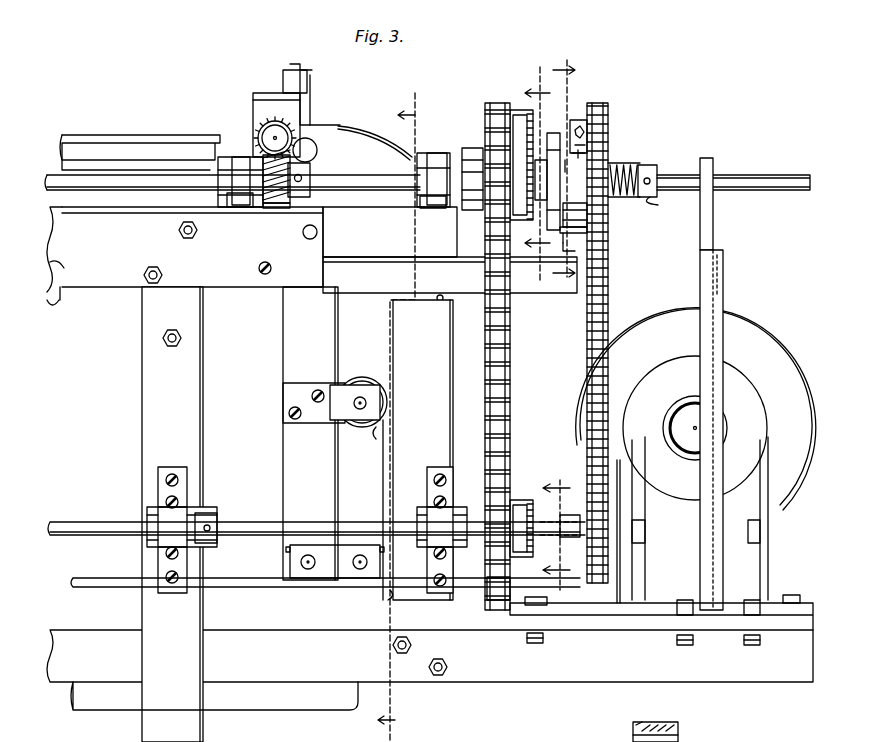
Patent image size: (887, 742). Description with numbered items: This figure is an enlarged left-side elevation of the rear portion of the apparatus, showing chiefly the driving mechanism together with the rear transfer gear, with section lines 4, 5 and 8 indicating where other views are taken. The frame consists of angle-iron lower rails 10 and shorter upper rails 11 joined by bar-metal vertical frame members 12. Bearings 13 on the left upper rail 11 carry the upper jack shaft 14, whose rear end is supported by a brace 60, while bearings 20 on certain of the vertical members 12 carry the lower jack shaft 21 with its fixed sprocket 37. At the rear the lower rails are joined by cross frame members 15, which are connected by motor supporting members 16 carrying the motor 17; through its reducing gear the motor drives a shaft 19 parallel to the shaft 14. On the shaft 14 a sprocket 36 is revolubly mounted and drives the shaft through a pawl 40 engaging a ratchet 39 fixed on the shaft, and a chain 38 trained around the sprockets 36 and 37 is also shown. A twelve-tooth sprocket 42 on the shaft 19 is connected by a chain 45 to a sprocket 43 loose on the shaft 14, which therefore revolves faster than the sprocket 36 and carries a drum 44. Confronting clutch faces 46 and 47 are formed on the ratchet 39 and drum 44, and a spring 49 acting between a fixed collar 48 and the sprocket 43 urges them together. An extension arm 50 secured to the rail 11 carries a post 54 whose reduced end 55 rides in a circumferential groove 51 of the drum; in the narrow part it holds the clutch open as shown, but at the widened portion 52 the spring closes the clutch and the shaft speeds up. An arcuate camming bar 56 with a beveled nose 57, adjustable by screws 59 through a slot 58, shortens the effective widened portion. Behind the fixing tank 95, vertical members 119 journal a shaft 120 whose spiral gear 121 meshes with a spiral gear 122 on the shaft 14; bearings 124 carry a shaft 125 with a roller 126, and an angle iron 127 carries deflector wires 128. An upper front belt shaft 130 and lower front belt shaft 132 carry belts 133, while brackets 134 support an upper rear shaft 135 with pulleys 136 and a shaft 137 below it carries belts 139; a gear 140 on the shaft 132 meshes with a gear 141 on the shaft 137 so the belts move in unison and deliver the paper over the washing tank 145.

The section line 4- 4 is at (396, 413).
The section line 5- 5 is at (537, 173).
The section line 8- 8 is at (564, 169).
The lower rails 10 is at (532, 698).
The upper rails 11 is at (62, 296).
The vertical frame members 12 is at (142, 410).
The bearings 13 is at (230, 156).
The upper jack shaft 14 is at (788, 176).
The cross frame members 15 is at (525, 626).
The motor supporting members 16 is at (618, 628).
The motor 17 is at (755, 340).
The shaft 19 is at (562, 534).
The bearings 20 is at (188, 480).
The lower jack shaft 21 is at (255, 512).
The sprocket 36 is at (480, 146).
The sprocket 37 is at (512, 500).
The chain 38 is at (510, 395).
The ratchet 39 is at (512, 218).
The pawl 40 is at (523, 110).
The sprocket 42 is at (574, 516).
The sprocket 43 is at (615, 163).
The drum 44 is at (575, 220).
The chain 45 is at (609, 302).
The clutch face 46 is at (574, 122).
The clutch face 47 is at (582, 128).
The collar 48 is at (656, 165).
The spring 49 is at (658, 206).
The extension arm 50 is at (380, 300).
The circumferential groove 51 is at (575, 160).
The widened portion 52 is at (572, 205).
The post 54 is at (580, 250).
The reduced end 55 is at (576, 232).
The arcuate camming bar 56 is at (588, 130).
The beveled nose 57 is at (575, 165).
The slot 58 is at (600, 128).
The screws 59 is at (590, 120).
The brace 60 is at (712, 230).
The fixing tank 95 is at (140, 144).
The vertical members 119 is at (256, 108).
The shaft 120 is at (305, 115).
The spiral gear 121 is at (312, 124).
The spiral gear 122 is at (280, 220).
The bearings 124 is at (292, 142).
The shaft 125 is at (316, 150).
The roller 126 is at (310, 166).
The angle iron 127 is at (281, 82).
The deflector wires 128 is at (350, 127).
The upper front belt shaft 130 is at (318, 232).
The lower front belt shaft 132 is at (308, 570).
The belts 133 is at (330, 470).
The brackets 134 is at (290, 395).
The upper rear shaft 135 is at (368, 402).
The belt pulleys 136 is at (368, 380).
The shaft 137 is at (360, 570).
The belts 139 is at (383, 443).
The gear 140 is at (288, 562).
The gear 141 is at (392, 600).
The washing tank 145 is at (345, 720).